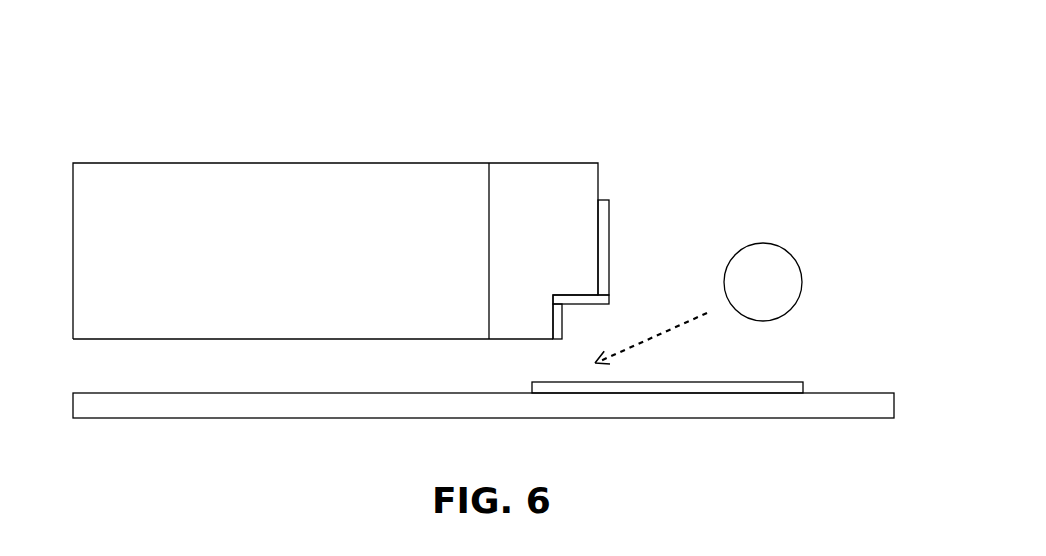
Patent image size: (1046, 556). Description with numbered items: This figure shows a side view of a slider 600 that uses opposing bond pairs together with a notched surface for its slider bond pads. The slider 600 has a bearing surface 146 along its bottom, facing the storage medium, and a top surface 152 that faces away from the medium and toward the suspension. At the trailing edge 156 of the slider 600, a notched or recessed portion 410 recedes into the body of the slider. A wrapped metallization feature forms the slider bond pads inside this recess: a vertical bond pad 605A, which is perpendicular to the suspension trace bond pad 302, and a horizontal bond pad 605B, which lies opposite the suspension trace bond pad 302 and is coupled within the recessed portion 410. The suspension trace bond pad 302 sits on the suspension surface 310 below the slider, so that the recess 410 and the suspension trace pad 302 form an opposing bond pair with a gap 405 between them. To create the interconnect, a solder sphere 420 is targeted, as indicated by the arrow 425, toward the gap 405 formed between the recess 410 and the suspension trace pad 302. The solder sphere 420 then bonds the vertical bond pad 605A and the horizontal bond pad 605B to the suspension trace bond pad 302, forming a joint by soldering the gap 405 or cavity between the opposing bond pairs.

The slider 600 is at (722, 80).
The bearing surface 146 is at (247, 152).
The top surface 152 is at (70, 352).
The trailing edge 156 is at (620, 158).
The recessed portion 410 is at (535, 274).
The vertical bond pad 605A is at (556, 340).
The horizontal bond pad 605B is at (610, 299).
The solder sphere 420 is at (794, 246).
The arrow 425 is at (664, 338).
The gap 405 is at (572, 372).
The suspension trace bond pad 302 is at (795, 381).
The suspension surface 310 is at (840, 393).